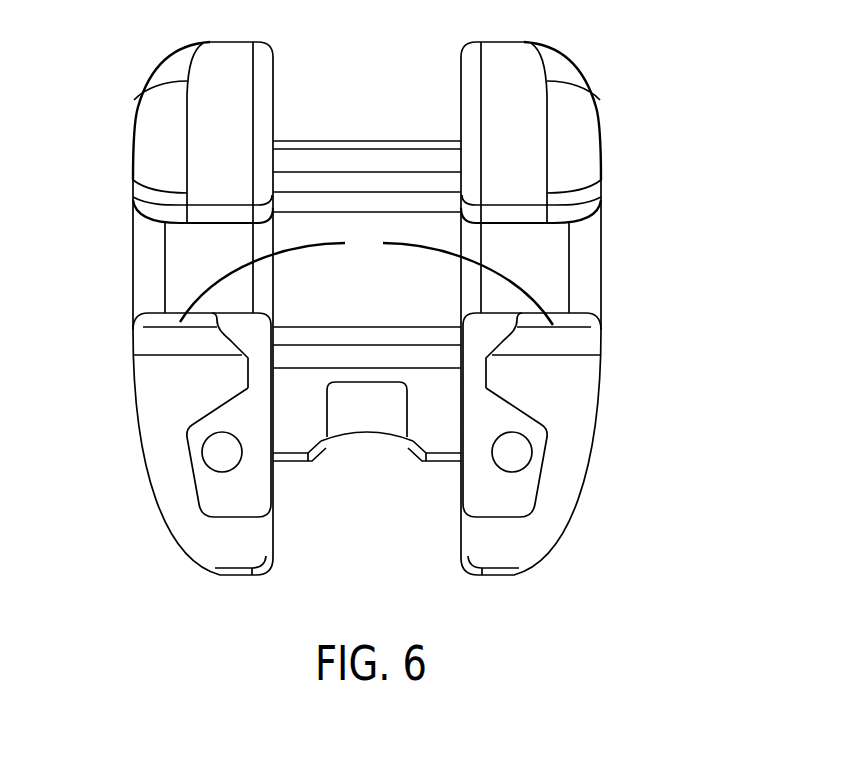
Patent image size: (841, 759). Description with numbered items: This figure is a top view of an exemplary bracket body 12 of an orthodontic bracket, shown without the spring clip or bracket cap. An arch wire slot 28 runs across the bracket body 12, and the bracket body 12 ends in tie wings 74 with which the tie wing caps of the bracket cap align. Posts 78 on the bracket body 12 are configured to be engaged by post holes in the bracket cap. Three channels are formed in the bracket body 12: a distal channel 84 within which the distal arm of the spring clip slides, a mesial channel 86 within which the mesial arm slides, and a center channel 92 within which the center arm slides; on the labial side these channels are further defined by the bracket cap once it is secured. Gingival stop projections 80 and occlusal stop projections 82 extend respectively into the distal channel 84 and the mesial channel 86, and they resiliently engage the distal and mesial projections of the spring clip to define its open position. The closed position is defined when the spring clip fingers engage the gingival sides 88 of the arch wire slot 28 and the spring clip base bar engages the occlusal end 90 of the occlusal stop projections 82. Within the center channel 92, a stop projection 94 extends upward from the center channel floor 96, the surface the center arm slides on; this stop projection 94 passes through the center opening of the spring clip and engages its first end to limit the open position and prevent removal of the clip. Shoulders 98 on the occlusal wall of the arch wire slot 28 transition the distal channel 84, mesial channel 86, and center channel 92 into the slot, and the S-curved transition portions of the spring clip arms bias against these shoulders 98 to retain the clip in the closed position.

The bracket body 12 is at (389, 328).
The arch wire slot 28 is at (533, 282).
The tie wings 74 is at (175, 556).
The posts 78 is at (203, 460).
The gingival stop projections 80 is at (232, 323).
The occlusal stop projections 82 is at (200, 425).
The distal channel 84 is at (178, 373).
The mesial channel 86 is at (563, 490).
The gingival sides 88 is at (205, 224).
The occlusal end 90 is at (245, 517).
The center channel 92 is at (371, 517).
The stop projection 94 is at (366, 405).
The center channel floor 96 is at (294, 433).
The shoulders 98 is at (368, 327).